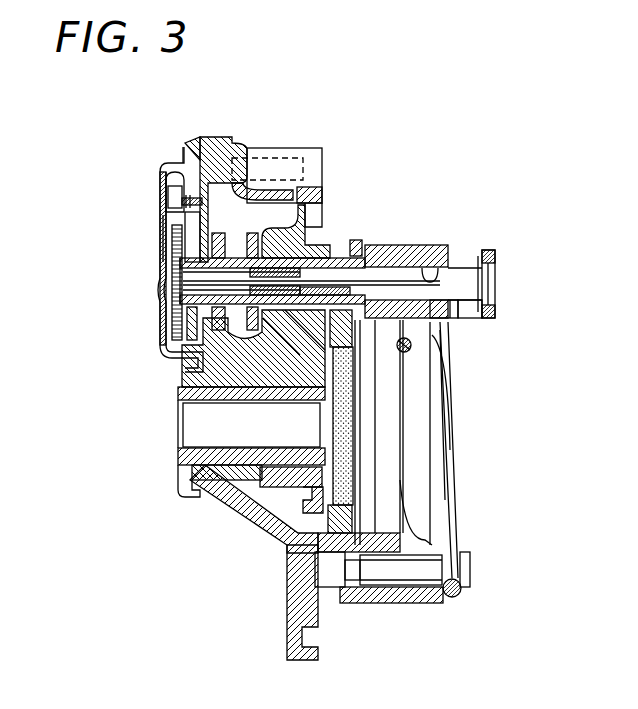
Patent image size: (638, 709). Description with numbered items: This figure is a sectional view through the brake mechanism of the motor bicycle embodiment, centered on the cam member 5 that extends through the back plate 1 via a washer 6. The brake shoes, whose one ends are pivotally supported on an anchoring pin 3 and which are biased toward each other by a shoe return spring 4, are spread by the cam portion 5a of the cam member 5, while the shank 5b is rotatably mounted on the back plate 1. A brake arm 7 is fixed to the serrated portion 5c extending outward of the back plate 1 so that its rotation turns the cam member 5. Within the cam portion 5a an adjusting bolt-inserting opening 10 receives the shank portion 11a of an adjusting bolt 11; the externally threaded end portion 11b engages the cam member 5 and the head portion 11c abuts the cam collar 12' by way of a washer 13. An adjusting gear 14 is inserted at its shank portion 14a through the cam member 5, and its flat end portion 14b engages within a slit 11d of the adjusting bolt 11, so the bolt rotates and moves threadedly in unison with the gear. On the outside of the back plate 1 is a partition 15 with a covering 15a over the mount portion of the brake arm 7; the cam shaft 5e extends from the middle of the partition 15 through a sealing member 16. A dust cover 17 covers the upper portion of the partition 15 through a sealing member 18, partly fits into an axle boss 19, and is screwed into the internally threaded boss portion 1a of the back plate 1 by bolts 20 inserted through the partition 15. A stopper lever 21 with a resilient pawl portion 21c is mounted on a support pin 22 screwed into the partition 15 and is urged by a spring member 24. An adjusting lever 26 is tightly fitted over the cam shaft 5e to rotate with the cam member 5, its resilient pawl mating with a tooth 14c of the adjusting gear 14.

The back plate 1 is at (288, 610).
The internally threaded boss portion 1a is at (306, 150).
The anchoring pin 3 is at (398, 580).
The shoe return spring 4 is at (447, 465).
The cam member 5 is at (429, 238).
The cam portion 5a is at (425, 250).
The shank 5b is at (314, 220).
The serrated portion 5c is at (219, 233).
The cam shaft 5e is at (187, 327).
The washer 6 is at (365, 322).
The brake arm 7 is at (254, 232).
The adjusting bolt-inserting opening 10 is at (444, 268).
The adjusting bolt 11 is at (503, 280).
The shank portion 11a is at (468, 310).
The externally threaded end portion 11b is at (352, 275).
The head portion 11c is at (496, 300).
The slit 11d is at (355, 240).
The cam collar 12' is at (466, 428).
The washer 13 is at (485, 255).
The adjusting gear 14 is at (170, 312).
The shank portion 14a is at (187, 280).
The flat end portion 14b is at (275, 320).
The tooth 14c is at (176, 248).
The partition 15 is at (214, 140).
The covering 15a is at (272, 186).
The sealing member 16 is at (190, 337).
The dust cover 17 is at (162, 170).
The sealing member 18 is at (181, 185).
The axle boss 19 is at (180, 458).
The bolt 20 is at (265, 158).
The stopper lever 21 is at (166, 178).
The resilient pawl portion 21c is at (168, 195).
The support pin 22 is at (185, 202).
The spring member 24 is at (184, 162).
The adjusting lever 26 is at (162, 237).